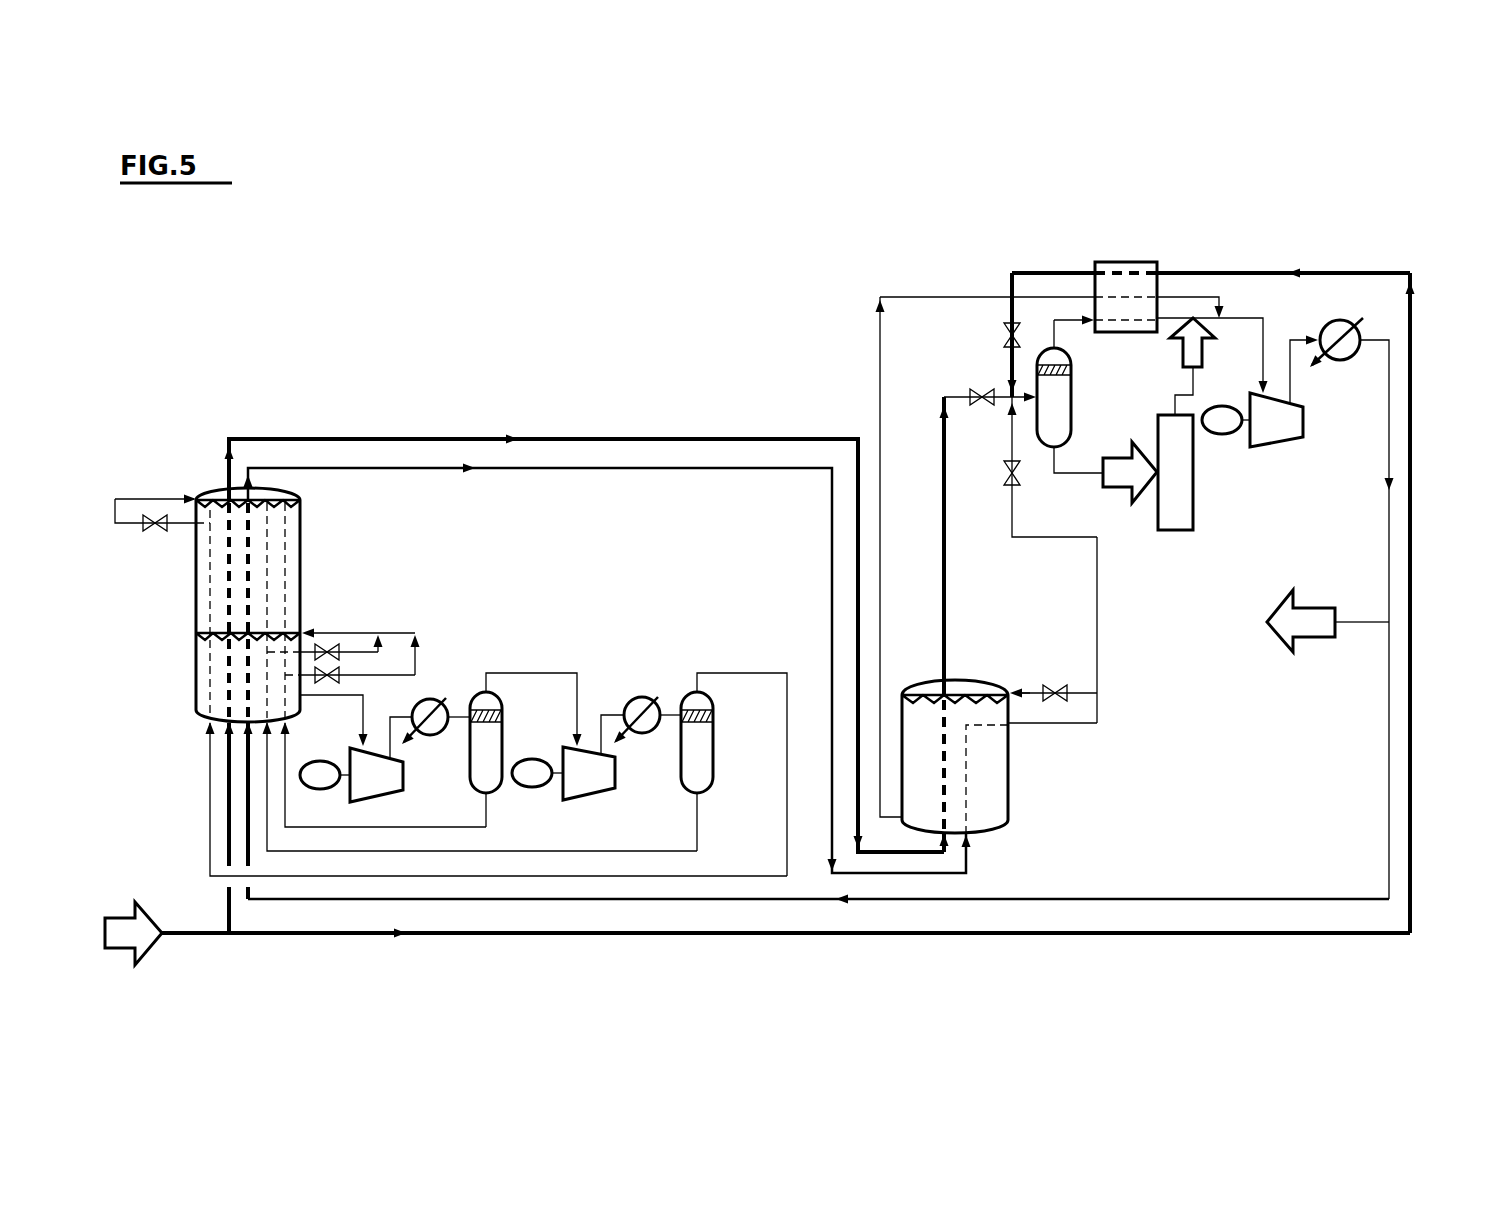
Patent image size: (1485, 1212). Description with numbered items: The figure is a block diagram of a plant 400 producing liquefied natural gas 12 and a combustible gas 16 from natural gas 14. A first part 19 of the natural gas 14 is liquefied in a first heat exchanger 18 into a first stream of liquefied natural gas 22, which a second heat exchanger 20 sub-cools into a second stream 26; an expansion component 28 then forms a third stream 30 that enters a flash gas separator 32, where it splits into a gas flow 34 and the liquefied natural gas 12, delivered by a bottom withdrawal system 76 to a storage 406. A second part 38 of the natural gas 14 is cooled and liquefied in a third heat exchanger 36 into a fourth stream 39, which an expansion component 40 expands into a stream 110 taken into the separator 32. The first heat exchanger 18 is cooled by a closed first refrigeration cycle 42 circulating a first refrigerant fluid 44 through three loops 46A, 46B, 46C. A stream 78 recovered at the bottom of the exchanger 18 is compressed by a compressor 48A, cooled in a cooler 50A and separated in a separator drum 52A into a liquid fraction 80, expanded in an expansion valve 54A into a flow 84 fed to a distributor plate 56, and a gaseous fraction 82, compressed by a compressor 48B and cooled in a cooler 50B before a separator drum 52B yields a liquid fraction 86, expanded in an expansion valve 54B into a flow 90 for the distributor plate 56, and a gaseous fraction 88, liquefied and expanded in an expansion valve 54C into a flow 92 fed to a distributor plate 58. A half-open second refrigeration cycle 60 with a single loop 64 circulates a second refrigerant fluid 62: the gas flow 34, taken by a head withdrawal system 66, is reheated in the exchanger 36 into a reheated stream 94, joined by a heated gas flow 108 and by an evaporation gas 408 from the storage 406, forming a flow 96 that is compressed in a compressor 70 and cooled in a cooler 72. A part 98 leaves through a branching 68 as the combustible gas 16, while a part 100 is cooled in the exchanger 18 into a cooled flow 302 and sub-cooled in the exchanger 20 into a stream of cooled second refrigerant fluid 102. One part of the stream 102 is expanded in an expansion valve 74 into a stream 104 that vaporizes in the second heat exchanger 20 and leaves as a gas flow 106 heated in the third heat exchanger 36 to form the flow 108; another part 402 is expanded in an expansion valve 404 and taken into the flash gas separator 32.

The liquefied natural gas 12 is at (1118, 480).
The natural gas 14 is at (118, 940).
The combustible gas 16 is at (1288, 626).
The first heat exchanger 18 is at (176, 634).
The first part of the natural gas 19 is at (227, 786).
The second heat exchanger 20 is at (990, 663).
The first stream of liquefied natural gas 22 is at (616, 437).
The second stream of sub-cooled liquefied natural gas 26 is at (946, 520).
The expansion component 28 is at (978, 393).
The third stream of sub-cooled and expanded liquefied natural gas 30 is at (1003, 400).
The flash gas separator 32 is at (1073, 410).
The gas flow 34 is at (1058, 338).
The third heat exchanger 36 is at (1125, 256).
The second part of the natural gas 38 is at (318, 935).
The fourth stream of liquefied natural gas 39 is at (1020, 270).
The expansion component 40 is at (1003, 328).
The first refrigeration cycle 42 is at (550, 628).
The first refrigerant fluid 44 is at (363, 704).
The first loop 46A is at (452, 828).
The second loop 46B is at (575, 852).
The third loop 46C is at (648, 877).
The compressor 48A is at (403, 776).
The compressor 48B is at (616, 776).
The cooler 50A is at (433, 700).
The cooler 50B is at (642, 696).
The separator drum 52A is at (503, 736).
The separator drum 52B is at (716, 752).
The expansion valve 54A is at (345, 672).
The expansion valve 54B is at (329, 643).
The expansion valve 54C is at (150, 532).
The distributor plate 56 is at (270, 630).
The distributor plate 58 is at (285, 489).
The second refrigeration cycle 60 is at (1060, 791).
The second refrigerant fluid 62 is at (1034, 688).
The loop 64 is at (1230, 898).
The withdrawal system 66 is at (1045, 345).
The branching 68 is at (1365, 621).
The expander 70 is at (1275, 447).
The cooler 72 is at (1337, 360).
The expansion valve 74 is at (1058, 686).
The withdrawal system 76 is at (1050, 450).
The stream of the first refrigerant fluid 78 is at (333, 696).
The liquid fraction 80 is at (487, 800).
The gaseous fraction 82 is at (489, 670).
The flow 84 is at (415, 645).
The liquid fraction 86 is at (698, 830).
The gaseous fraction 88 is at (740, 673).
The flow 90 is at (382, 648).
The flow 92 is at (150, 493).
The reheated stream 94 is at (1234, 318).
The flow 96 is at (1266, 344).
The part of the flow 98 is at (1352, 624).
The part of the flow 100 is at (1392, 712).
The stream of cooled second refrigerant fluid 102 is at (1032, 725).
The stream of cooled and expanded second refrigerant fluid 104 is at (1035, 698).
The gas flow of the second refrigerant fluid 106 is at (878, 375).
The flow of heated gas 108 is at (1190, 290).
The stream 110 is at (1003, 367).
The cooled flow 302 is at (400, 467).
The plant 400 is at (1397, 199).
The part of the stream of cooled second refrigerant fluid 402 is at (1098, 630).
The expansion valve 404 is at (1004, 471).
The storage 406 is at (1175, 530).
The evaporation gas 408 is at (1183, 362).